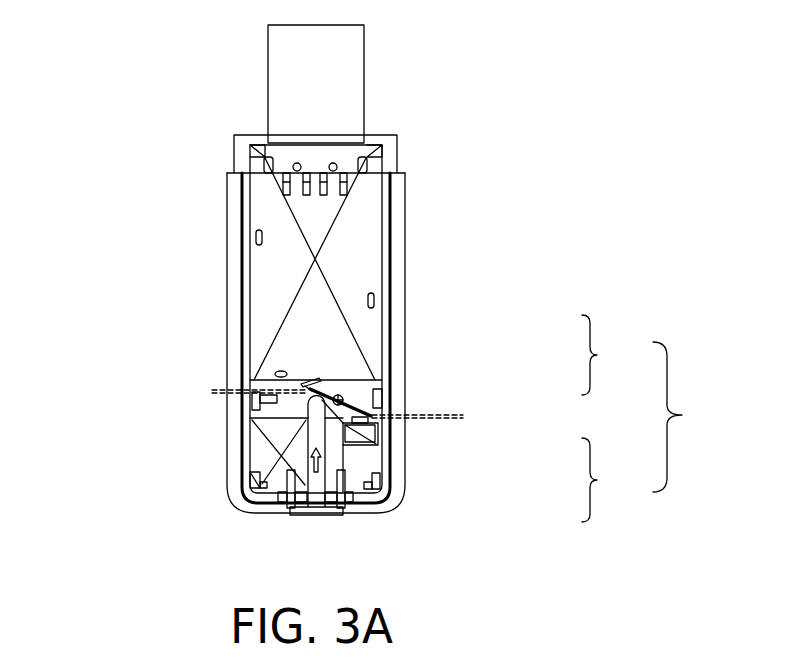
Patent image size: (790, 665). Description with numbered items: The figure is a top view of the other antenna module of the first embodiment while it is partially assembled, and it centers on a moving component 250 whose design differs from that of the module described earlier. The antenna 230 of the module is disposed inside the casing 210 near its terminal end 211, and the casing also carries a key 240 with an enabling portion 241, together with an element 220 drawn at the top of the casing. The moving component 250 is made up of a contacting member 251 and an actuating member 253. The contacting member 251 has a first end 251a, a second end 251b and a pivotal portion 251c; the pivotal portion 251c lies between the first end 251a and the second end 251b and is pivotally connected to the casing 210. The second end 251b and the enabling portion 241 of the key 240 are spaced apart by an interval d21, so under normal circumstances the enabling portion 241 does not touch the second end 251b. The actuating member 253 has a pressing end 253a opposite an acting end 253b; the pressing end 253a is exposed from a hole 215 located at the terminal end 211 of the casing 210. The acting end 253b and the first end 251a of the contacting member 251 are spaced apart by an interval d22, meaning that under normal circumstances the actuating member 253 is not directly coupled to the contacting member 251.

The casing 210 is at (238, 231).
The terminal end 211 is at (213, 502).
The hole 215 is at (287, 517).
The connector / plug body 220 is at (268, 56).
The antenna 230 is at (268, 452).
The key 240 is at (358, 449).
The enabling portion 241 is at (378, 436).
The moving component 250 is at (693, 417).
The contacting member 251 is at (614, 355).
The first end 251a is at (320, 381).
The second end 251b is at (373, 411).
The pivotal portion 251c is at (343, 397).
The actuating member 253 is at (614, 480).
The pressing end 253a is at (337, 518).
The acting end 253b is at (346, 446).
The interval d21 is at (468, 393).
The interval d22 is at (208, 368).